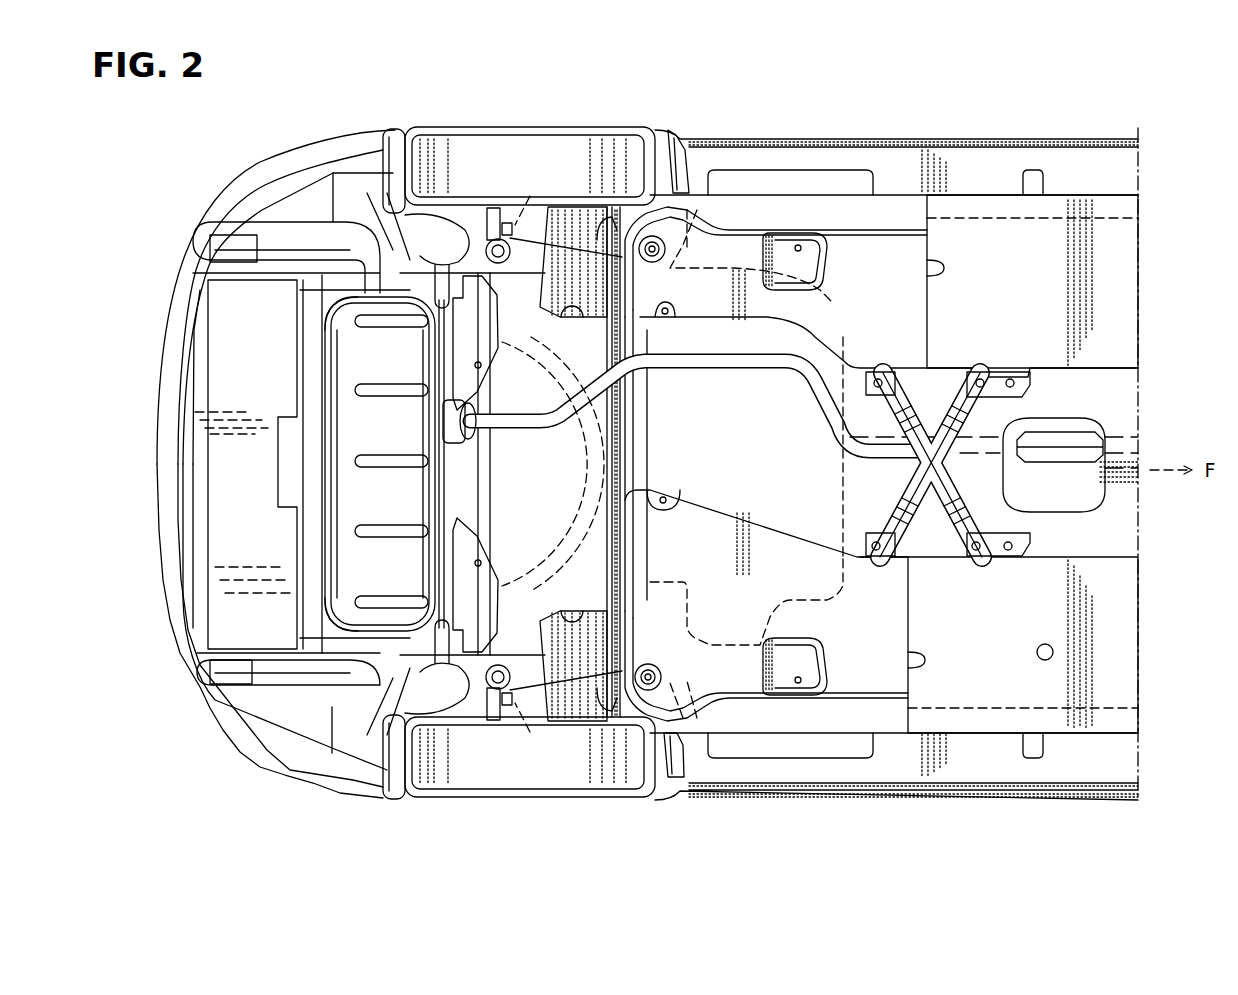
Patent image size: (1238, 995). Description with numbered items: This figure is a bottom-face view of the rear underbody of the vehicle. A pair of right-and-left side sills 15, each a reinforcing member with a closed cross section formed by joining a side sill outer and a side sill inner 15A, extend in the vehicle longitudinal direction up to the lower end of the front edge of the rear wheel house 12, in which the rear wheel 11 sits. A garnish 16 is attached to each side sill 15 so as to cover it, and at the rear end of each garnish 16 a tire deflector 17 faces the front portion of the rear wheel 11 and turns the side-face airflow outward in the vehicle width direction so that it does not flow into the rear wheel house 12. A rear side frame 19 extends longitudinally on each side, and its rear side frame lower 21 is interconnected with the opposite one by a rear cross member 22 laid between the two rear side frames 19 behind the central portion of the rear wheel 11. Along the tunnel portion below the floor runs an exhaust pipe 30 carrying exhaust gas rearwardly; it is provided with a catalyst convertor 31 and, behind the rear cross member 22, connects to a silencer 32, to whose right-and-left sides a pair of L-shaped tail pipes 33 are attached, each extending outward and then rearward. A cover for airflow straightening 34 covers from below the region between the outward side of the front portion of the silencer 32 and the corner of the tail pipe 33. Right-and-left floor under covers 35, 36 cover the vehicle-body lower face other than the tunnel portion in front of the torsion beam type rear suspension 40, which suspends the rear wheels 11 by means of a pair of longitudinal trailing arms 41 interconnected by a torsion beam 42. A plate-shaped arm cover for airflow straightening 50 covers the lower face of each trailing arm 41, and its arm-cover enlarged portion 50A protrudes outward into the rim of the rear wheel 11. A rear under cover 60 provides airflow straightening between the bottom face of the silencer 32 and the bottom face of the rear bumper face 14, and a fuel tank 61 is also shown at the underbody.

The rear wheel 11 is at (479, 127).
The rear wheel house 12 is at (397, 128).
The rear bumper face 14 is at (150, 377).
The side sill 15 is at (1122, 222).
The side sill inner 15A is at (963, 222).
The garnish 16 is at (978, 157).
The tire deflector 17 is at (690, 165).
The rear side frame 19 is at (340, 315).
The rear side frame lower 21 is at (500, 280).
The rear cross member 22 is at (484, 466).
The exhaust pipe 30 is at (701, 378).
The catalyst convertor 31 is at (1046, 460).
The silencer 32 is at (370, 430).
The tail pipe 33 is at (290, 248).
The cover for airflow straightening 34 is at (393, 250).
The floor under cover for airflow straightening 35 is at (1005, 298).
The floor under cover for airflow straightening 36 is at (848, 300).
The rear suspension 40 is at (633, 451).
The trailing arm 41 is at (555, 197).
The torsion beam 42 is at (632, 480).
The arm cover for airflow straightening 50 is at (579, 333).
The arm-cover enlarged portion 50A is at (530, 196).
The rear under cover 60 is at (230, 383).
The fuel tank 61 is at (830, 598).